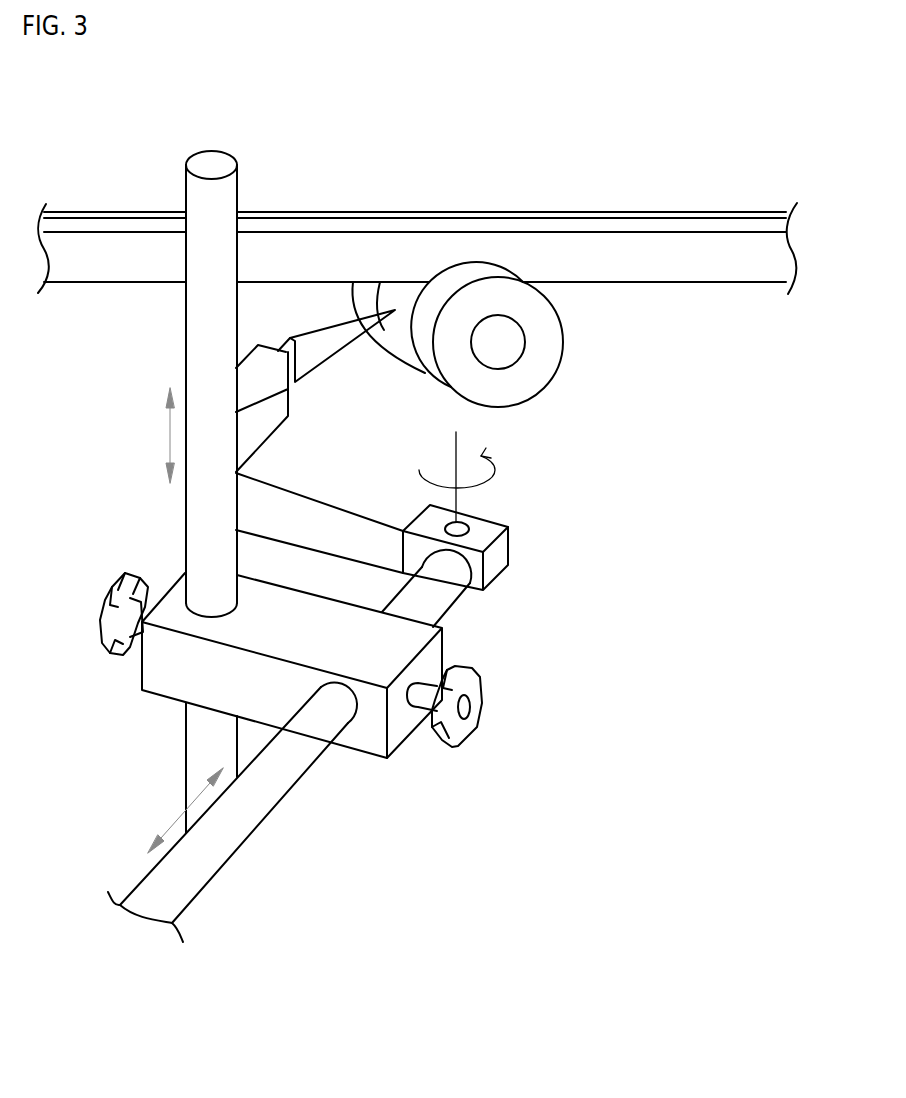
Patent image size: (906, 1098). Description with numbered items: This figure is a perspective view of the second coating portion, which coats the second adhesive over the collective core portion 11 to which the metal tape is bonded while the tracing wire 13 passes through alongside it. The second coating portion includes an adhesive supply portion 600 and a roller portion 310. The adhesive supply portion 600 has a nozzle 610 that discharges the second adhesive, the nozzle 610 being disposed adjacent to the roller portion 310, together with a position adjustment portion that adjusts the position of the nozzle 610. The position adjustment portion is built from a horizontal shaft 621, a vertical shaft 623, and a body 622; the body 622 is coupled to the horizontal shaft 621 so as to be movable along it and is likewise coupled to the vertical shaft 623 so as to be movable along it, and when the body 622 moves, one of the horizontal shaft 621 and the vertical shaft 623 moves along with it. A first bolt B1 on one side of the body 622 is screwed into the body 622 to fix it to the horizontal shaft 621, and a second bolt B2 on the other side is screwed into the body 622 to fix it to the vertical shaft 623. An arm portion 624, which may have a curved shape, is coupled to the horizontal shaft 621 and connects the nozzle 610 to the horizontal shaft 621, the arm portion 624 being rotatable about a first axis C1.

The collective core portion 11 is at (448, 240).
The tracing wire 13 is at (370, 214).
The roller portion 310 is at (555, 340).
The adhesive supply portion 600 is at (542, 485).
The nozzle 610 is at (320, 345).
The horizontal shaft 621 is at (220, 838).
The body 622 is at (402, 733).
The vertical shaft 623 is at (187, 510).
The arm portion 624 is at (323, 522).
The first bolt B1 is at (480, 703).
The second bolt B2 is at (112, 607).
The first axis C1 is at (457, 442).